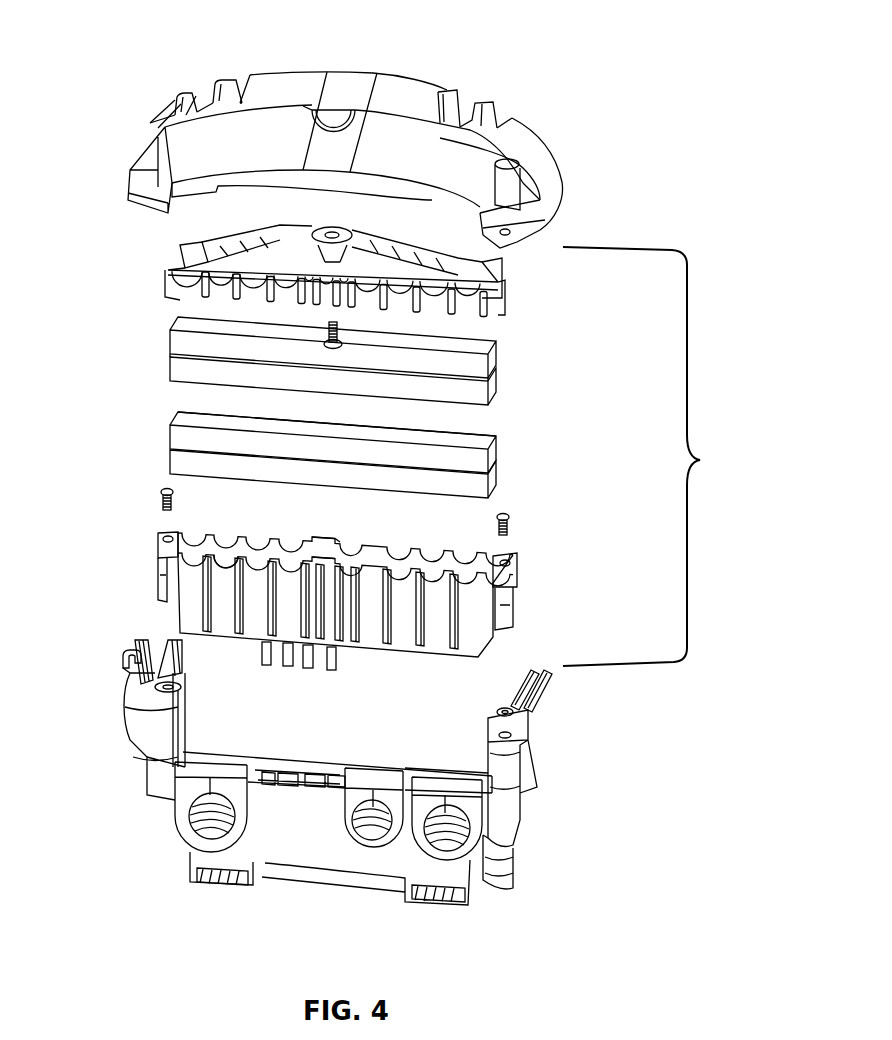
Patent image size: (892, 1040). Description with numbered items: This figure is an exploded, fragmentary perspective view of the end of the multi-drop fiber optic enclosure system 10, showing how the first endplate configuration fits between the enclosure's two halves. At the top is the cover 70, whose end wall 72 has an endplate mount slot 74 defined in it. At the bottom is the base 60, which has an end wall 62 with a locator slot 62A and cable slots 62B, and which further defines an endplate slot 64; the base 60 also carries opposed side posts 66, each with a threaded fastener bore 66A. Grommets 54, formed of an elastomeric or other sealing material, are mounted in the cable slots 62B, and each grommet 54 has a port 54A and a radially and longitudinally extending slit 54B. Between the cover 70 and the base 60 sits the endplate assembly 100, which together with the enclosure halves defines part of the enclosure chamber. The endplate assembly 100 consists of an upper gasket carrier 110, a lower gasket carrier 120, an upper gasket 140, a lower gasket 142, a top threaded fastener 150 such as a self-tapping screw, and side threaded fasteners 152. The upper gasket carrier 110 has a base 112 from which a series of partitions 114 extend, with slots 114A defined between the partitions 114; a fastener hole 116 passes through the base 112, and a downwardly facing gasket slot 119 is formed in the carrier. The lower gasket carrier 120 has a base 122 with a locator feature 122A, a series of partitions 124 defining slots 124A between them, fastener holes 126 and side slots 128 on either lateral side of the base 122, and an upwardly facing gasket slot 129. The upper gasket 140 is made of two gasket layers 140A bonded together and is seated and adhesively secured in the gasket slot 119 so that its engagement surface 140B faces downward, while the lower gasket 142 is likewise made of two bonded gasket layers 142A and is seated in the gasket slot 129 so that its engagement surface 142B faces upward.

The fiber optic enclosure system 10 is at (110, 31).
The cover 70 is at (232, 58).
The end wall 72 is at (178, 167).
The endplate mount slot 74 is at (218, 190).
The endplate assembly 100 is at (610, 483).
The upper gasket carrier 110 is at (506, 270).
The base 112 is at (390, 262).
The fastener hole 116 is at (336, 233).
The partitions 114 is at (202, 288).
The slots 114A is at (255, 300).
The gasket slot 119 is at (506, 299).
The top threaded fastener 150 is at (340, 335).
The upper gasket 140 is at (522, 345).
The gasket layers 140A is at (495, 353).
The engagement surface 140B is at (478, 400).
The lower gasket 142 is at (512, 457).
The gasket layers 142A is at (178, 438).
The engagement surface 142B is at (383, 432).
The side threaded fasteners 152 is at (160, 493).
The lower gasket carrier 120 is at (525, 591).
The base 122 is at (403, 632).
The locator feature 122A is at (300, 672).
The partitions 124 is at (297, 531).
The slots 124A is at (378, 556).
The gasket slot 129 is at (234, 536).
The fastener holes 126 is at (168, 540).
The side slots 128 is at (160, 580).
The base 60 is at (135, 758).
The end wall 62 is at (285, 850).
The locator slot 62A is at (318, 764).
The cable slots 62B is at (250, 822).
The endplate slot 64 is at (430, 758).
The side posts 66 is at (487, 717).
The threaded fastener bore 66A is at (165, 683).
The grommets 54 is at (178, 810).
The port 54A is at (200, 836).
The slit 54B is at (212, 797).